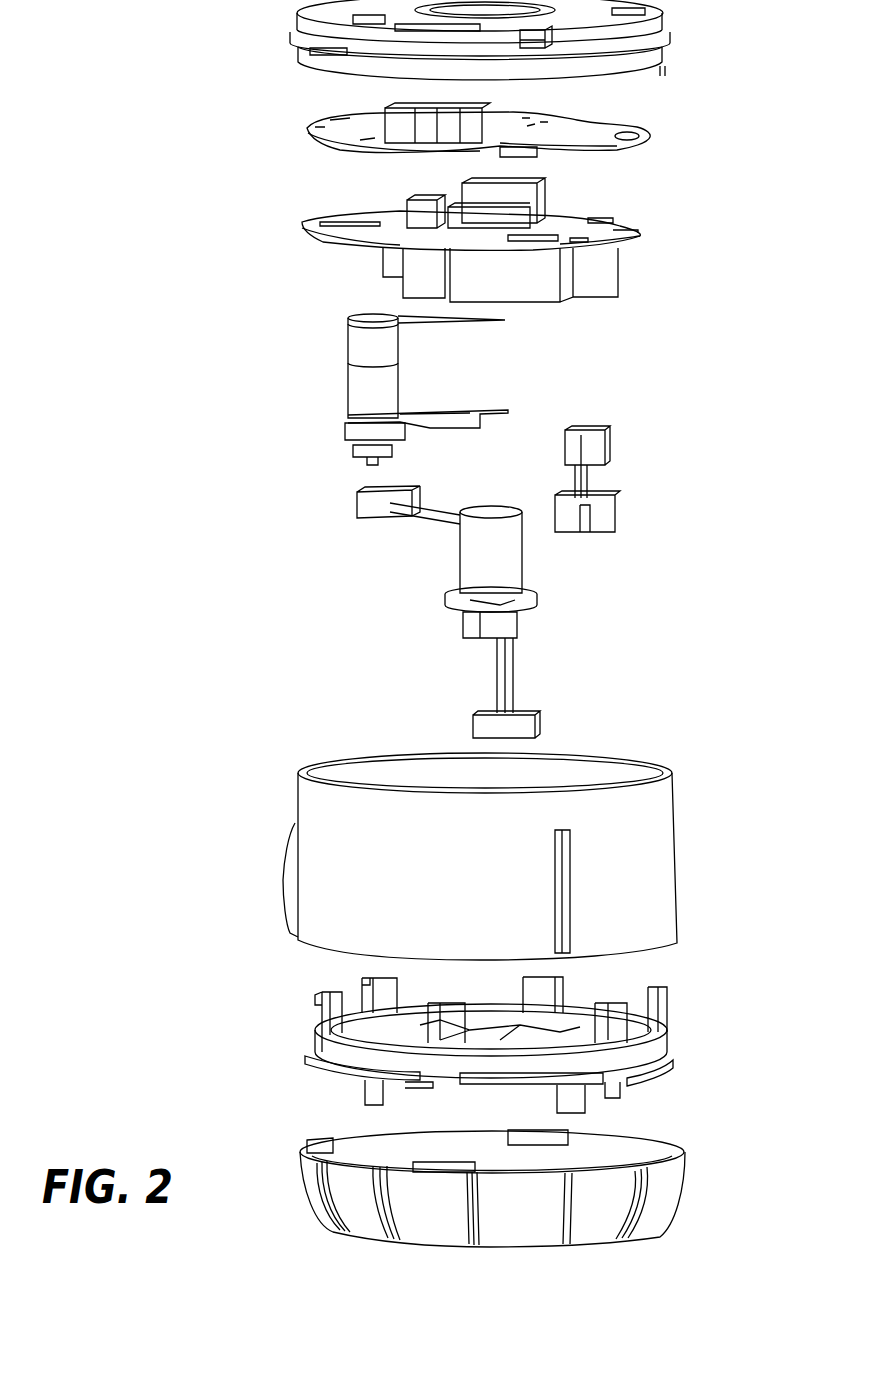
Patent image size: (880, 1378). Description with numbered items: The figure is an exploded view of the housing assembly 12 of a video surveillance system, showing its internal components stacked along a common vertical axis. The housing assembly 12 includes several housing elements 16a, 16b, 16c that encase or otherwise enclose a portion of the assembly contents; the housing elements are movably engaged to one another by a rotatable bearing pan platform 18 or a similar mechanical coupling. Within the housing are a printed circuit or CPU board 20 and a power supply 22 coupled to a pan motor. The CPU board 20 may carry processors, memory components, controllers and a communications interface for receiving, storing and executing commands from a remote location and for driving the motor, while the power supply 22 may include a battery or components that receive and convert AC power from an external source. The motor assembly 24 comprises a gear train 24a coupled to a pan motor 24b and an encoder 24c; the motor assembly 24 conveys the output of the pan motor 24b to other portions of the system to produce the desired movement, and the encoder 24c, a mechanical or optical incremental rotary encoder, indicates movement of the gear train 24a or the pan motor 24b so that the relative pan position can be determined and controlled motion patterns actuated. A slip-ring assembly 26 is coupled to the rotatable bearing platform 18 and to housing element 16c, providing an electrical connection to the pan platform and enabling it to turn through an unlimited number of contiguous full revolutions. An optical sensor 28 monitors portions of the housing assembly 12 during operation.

The housing assembly 12 is at (268, 0).
The housing element 16a is at (658, 34).
The housing element 16b is at (655, 840).
The housing element 16c is at (680, 1185).
The rotatable bearing pan platform 18 is at (655, 1050).
The CPU board 20 is at (608, 128).
The power supply 22 is at (615, 265).
The motor assembly 24 is at (332, 313).
The gear train 24a is at (390, 450).
The pan motor 24b is at (390, 373).
The encoder 24c is at (505, 322).
The slip-ring assembly 26 is at (505, 563).
The optical sensor 28 is at (610, 500).